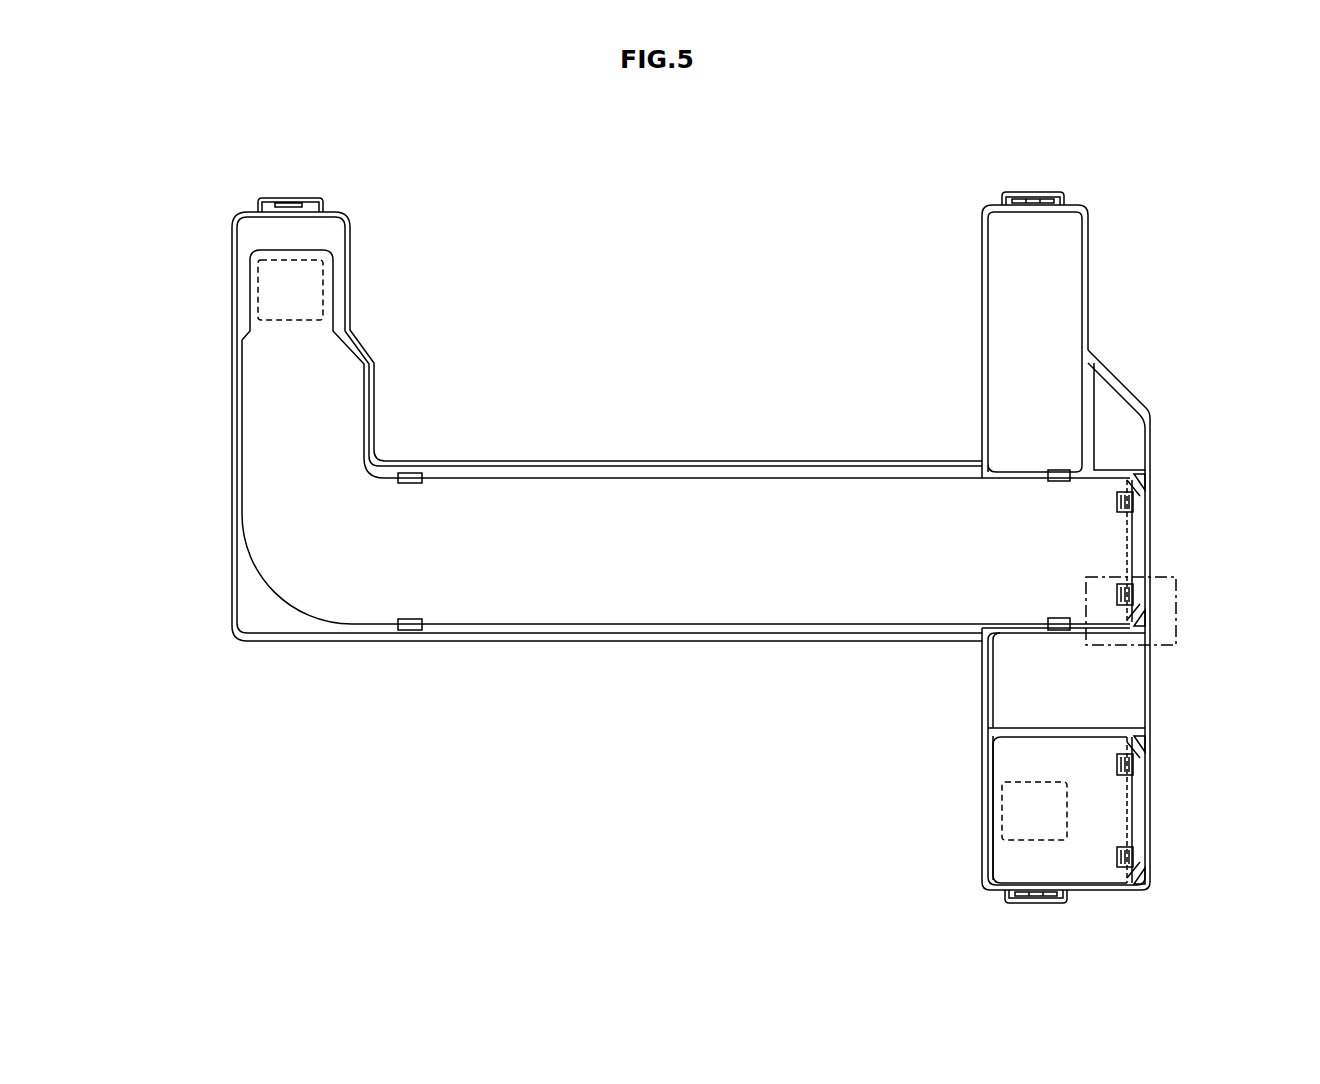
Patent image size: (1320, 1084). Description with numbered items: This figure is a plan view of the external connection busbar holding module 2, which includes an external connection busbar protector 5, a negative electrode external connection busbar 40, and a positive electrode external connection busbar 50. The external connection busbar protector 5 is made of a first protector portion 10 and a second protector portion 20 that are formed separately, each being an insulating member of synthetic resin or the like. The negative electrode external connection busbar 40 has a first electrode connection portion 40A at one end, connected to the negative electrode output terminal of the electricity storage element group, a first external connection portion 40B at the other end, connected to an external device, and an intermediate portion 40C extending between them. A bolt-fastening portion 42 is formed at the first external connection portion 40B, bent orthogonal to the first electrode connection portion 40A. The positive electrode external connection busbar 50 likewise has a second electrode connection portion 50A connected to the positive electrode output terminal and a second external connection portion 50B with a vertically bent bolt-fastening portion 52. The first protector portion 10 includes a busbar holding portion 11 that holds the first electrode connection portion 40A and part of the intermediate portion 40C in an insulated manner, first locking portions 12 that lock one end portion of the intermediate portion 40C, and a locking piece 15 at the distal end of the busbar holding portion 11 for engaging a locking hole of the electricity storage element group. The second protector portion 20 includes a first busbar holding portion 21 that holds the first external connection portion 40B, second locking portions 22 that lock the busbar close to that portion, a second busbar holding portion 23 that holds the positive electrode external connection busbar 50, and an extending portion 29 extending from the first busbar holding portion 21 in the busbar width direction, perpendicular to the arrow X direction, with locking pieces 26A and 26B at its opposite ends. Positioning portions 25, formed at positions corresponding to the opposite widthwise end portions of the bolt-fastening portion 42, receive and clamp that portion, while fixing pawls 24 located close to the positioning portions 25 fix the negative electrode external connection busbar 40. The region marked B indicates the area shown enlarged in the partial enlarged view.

The external connection busbar holding module 2 is at (621, 759).
The external connection busbar protector 5 is at (296, 681).
The first protector portion 10 is at (213, 409).
The busbar holding portion 11 is at (232, 322).
The first locking portions 12 is at (410, 475).
The locking piece 15 is at (297, 198).
The second protector portion 20 is at (1104, 283).
The first busbar holding portion 21 is at (1179, 506).
The second locking portions 22 is at (1060, 471).
The second busbar holding portion 23 is at (983, 842).
The fixing pawls 24 is at (1135, 502).
The positioning portions 25 is at (1159, 476).
The locking piece 26A is at (1030, 198).
The locking piece 26B is at (1040, 903).
The extending portion 29 is at (1090, 235).
The negative electrode external connection busbar 40 is at (286, 597).
The first electrode connection portion 40A is at (254, 291).
The first external connection portion 40B is at (1117, 540).
The intermediate portion 40C is at (705, 512).
The bolt-fastening portion 42 is at (1133, 560).
The positive electrode external connection busbar 50 is at (996, 881).
The second electrode connection portion 50A is at (998, 800).
The second external connection portion 50B is at (1117, 802).
The bolt-fastening portion 52 is at (1133, 822).
The region B is at (1178, 618).
The arrow X direction X is at (478, 744).